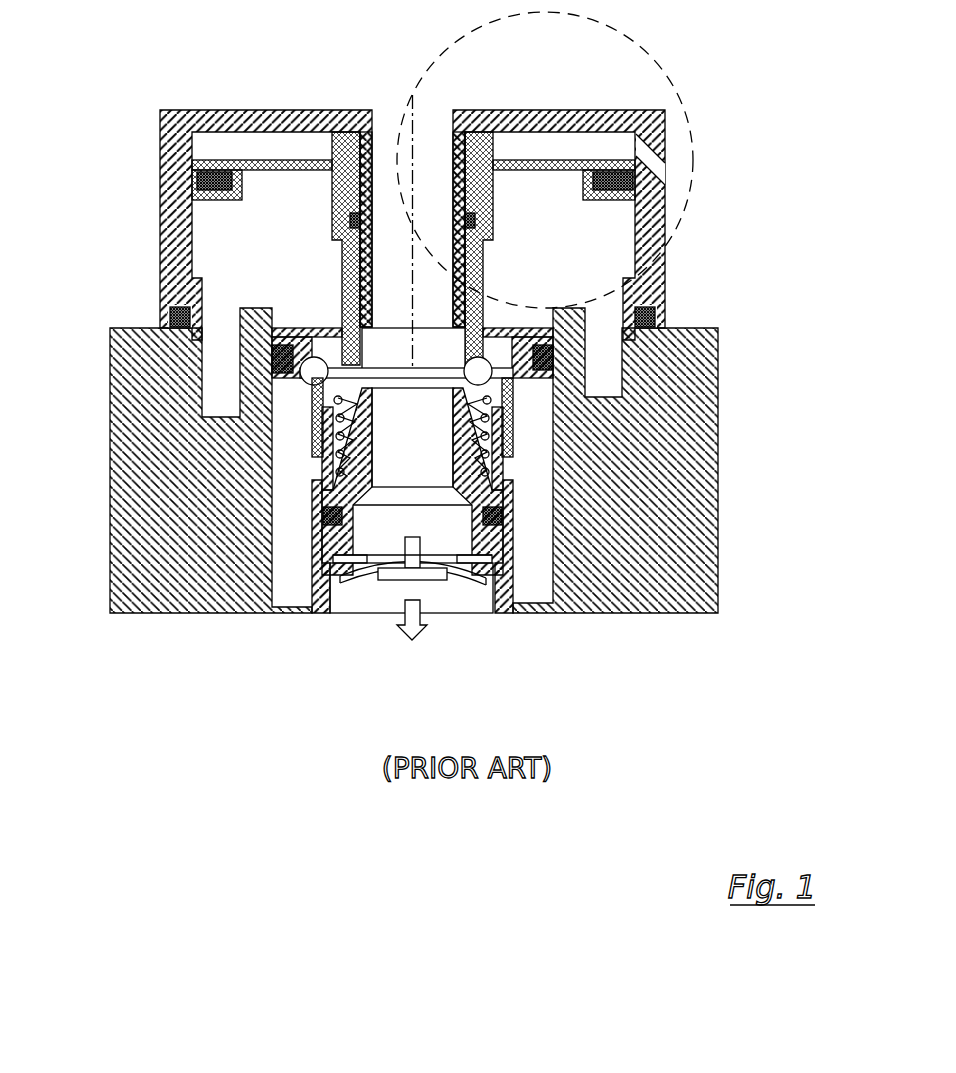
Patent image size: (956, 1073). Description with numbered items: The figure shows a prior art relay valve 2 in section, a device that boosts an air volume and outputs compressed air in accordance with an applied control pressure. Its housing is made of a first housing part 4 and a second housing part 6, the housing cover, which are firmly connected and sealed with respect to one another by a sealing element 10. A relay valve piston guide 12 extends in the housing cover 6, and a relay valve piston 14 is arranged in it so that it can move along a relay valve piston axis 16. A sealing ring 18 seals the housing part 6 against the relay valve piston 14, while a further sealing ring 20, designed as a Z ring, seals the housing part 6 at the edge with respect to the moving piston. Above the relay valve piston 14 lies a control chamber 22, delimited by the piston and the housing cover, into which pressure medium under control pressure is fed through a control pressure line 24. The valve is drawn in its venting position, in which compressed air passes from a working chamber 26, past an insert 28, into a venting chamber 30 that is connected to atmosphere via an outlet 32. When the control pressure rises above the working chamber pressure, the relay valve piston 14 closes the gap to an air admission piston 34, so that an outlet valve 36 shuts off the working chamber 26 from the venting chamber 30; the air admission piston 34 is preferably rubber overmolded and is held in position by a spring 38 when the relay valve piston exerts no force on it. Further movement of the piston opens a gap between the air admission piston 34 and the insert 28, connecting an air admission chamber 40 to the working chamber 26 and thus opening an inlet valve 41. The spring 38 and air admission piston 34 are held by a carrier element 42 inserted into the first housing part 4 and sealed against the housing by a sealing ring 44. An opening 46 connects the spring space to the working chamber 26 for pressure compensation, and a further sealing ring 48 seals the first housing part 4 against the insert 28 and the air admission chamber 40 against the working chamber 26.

The relay valve 2 is at (266, 77).
The first housing part 4 is at (705, 570).
The second housing part 6 is at (524, 110).
The sealing element 10 is at (170, 315).
The relay valve piston guide 12 is at (362, 125).
The relay valve piston 14 is at (350, 212).
The relay valve piston axis 16 is at (413, 235).
The sealing ring 18 is at (350, 224).
The further sealing ring 20 is at (192, 180).
The control chamber 22 is at (277, 156).
The control pressure line 24 is at (668, 176).
The working chamber 26 is at (536, 255).
The insert 28 is at (553, 368).
The venting chamber 30 is at (401, 445).
The outlet 32 is at (432, 625).
The air admission piston 34 is at (476, 390).
The outlet valve 36 is at (491, 377).
The spring 38 is at (355, 436).
The air admission chamber 40 is at (281, 585).
The inlet valve 41 is at (302, 381).
The carrier element 42 is at (352, 530).
The sealing ring 44 is at (478, 512).
The opening 46 is at (320, 396).
The further sealing ring 48 is at (272, 365).